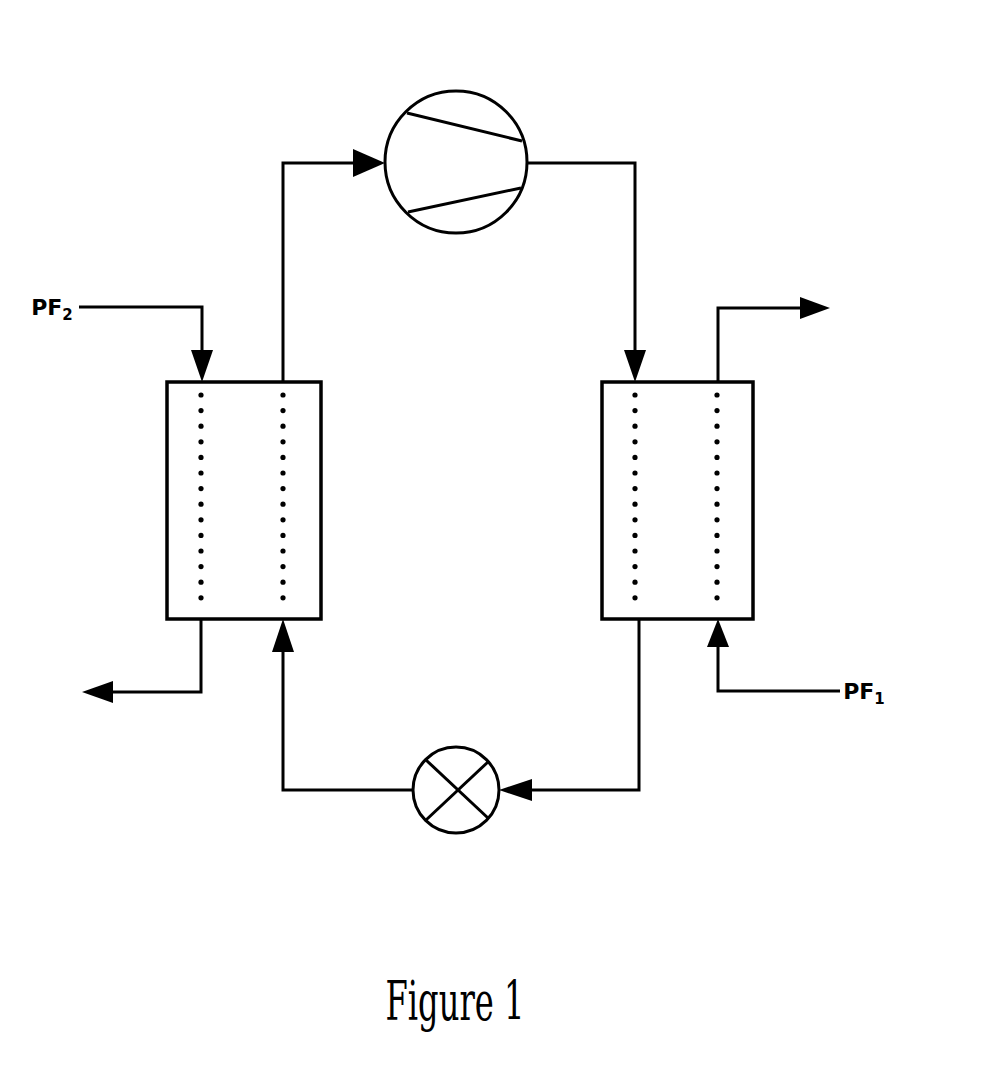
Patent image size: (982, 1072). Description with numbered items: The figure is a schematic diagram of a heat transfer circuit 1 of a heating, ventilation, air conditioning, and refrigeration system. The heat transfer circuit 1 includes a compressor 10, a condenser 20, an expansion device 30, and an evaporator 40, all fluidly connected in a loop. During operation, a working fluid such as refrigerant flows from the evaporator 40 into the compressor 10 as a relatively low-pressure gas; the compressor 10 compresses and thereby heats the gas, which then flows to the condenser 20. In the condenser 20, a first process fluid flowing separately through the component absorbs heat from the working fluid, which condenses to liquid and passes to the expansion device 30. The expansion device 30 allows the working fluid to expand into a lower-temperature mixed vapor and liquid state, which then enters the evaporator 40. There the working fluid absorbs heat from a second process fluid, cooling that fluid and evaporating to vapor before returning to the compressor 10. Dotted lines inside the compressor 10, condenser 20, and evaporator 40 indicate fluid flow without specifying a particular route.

The heat transfer circuit 1 is at (183, 229).
The compressor 10 is at (437, 92).
The condenser 20 is at (753, 435).
The expansion device 30 is at (497, 807).
The evaporator 40 is at (167, 440).